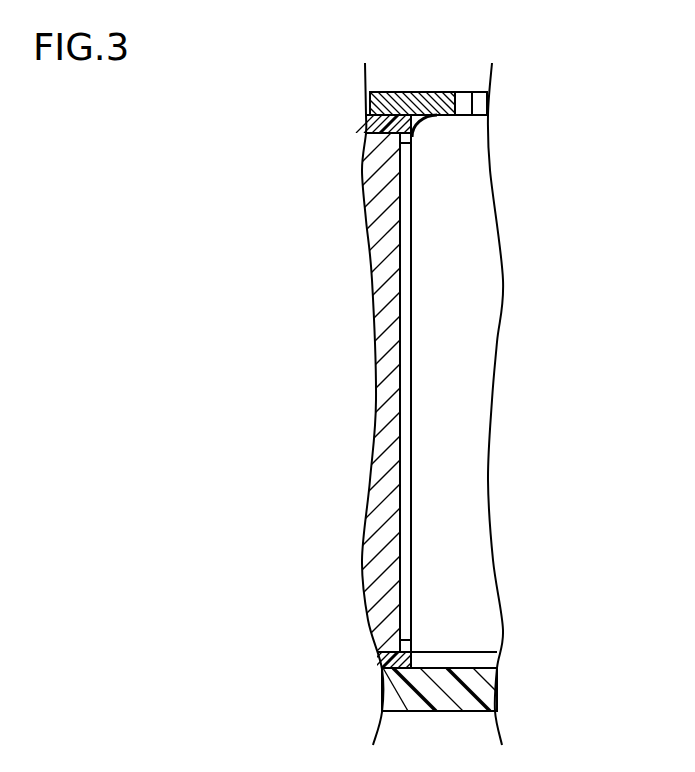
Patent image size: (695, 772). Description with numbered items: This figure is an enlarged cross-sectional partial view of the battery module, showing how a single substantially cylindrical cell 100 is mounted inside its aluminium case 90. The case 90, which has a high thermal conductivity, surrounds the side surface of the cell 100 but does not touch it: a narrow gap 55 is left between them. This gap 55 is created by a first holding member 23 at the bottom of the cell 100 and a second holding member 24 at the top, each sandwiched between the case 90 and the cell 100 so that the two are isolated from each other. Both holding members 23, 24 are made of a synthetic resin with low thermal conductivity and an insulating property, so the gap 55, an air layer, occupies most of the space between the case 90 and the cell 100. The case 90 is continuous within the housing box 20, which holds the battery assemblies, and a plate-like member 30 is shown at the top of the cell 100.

The cell 100 is at (473, 342).
The upper plate 30 is at (407, 102).
The second holding member 24 is at (370, 118).
The case 90 is at (378, 195).
The gap 55 is at (403, 278).
The first holding member 23 is at (380, 658).
The housing box 20 is at (482, 692).